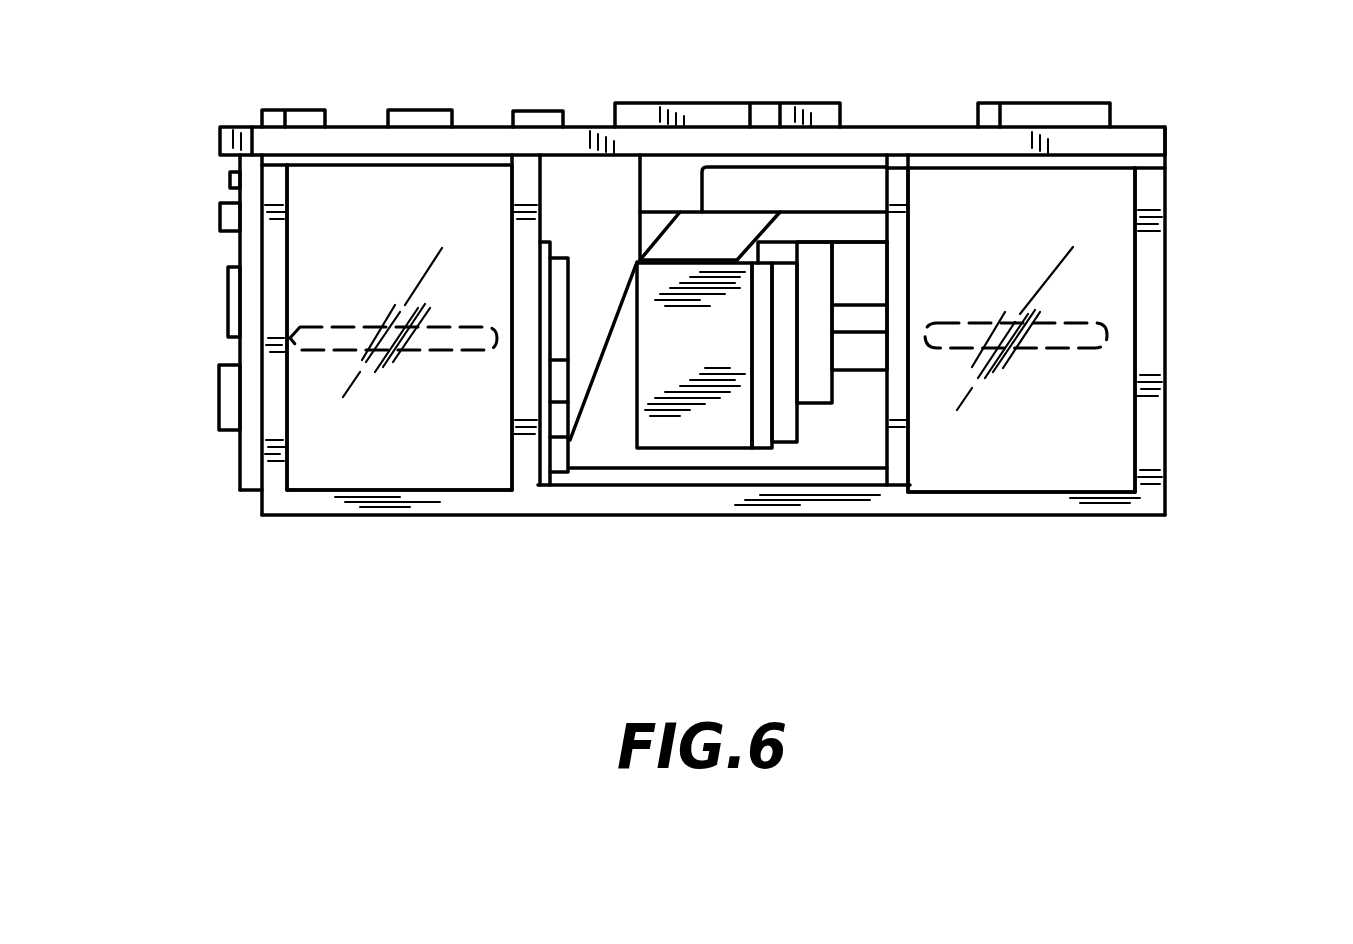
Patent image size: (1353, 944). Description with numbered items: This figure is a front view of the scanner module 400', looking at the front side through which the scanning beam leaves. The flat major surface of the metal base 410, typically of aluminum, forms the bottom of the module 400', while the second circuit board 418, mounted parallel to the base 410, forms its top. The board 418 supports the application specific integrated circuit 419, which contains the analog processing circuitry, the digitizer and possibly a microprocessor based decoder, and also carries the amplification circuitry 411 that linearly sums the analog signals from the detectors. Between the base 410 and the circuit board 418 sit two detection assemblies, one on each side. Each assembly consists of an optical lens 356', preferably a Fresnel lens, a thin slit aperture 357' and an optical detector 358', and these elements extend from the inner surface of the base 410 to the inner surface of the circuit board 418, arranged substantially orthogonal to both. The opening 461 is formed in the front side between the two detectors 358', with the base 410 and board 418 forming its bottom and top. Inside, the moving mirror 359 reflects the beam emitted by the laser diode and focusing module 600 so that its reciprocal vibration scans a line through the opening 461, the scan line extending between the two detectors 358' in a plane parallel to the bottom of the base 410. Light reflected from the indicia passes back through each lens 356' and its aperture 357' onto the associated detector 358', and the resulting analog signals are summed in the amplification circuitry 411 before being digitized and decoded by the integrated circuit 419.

The module 400' is at (774, 312).
The metal base 410 is at (1043, 517).
The amplification circuitry 411 is at (1068, 115).
The second circuit board 418 is at (900, 128).
The application specific integrated circuit 419 is at (622, 66).
The optical lenses 356' is at (765, 371).
The apertures 357' is at (702, 303).
The optical detectors 358' is at (722, 336).
The moving mirror 359 is at (725, 430).
The opening 461 is at (862, 438).
The wedge 600 is at (573, 437).